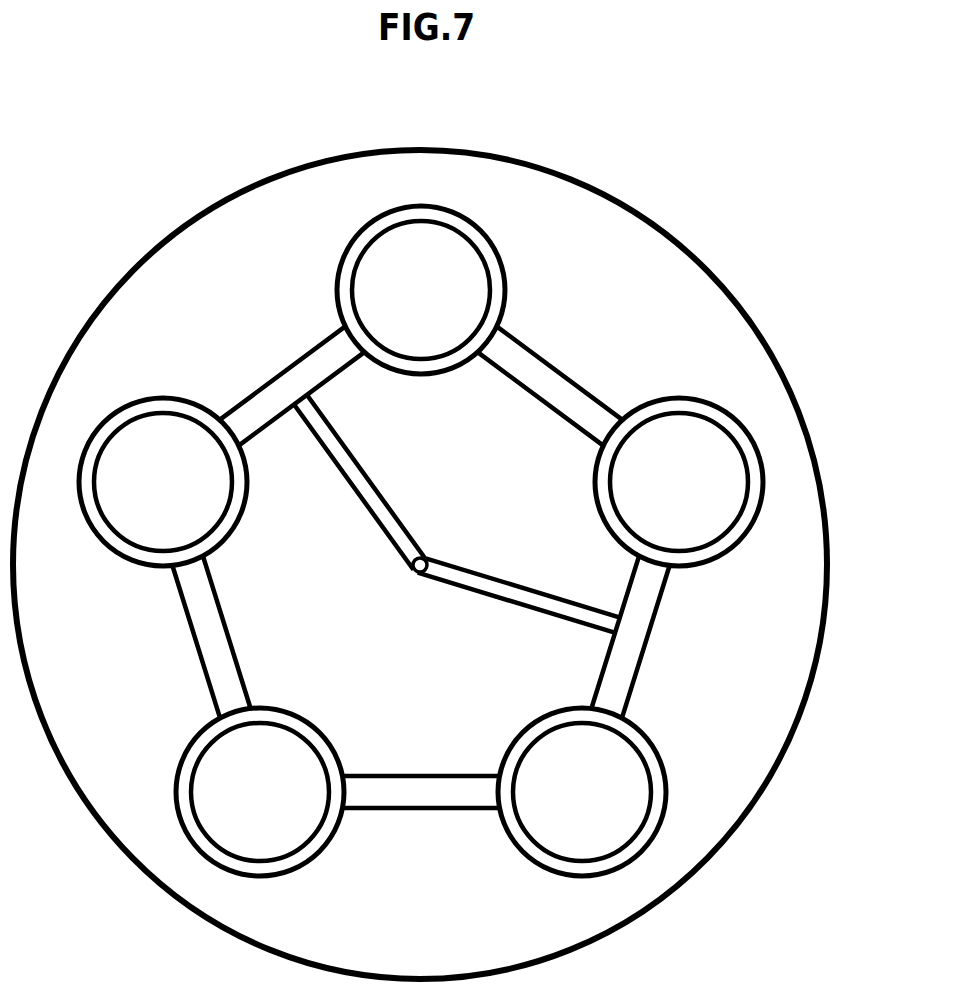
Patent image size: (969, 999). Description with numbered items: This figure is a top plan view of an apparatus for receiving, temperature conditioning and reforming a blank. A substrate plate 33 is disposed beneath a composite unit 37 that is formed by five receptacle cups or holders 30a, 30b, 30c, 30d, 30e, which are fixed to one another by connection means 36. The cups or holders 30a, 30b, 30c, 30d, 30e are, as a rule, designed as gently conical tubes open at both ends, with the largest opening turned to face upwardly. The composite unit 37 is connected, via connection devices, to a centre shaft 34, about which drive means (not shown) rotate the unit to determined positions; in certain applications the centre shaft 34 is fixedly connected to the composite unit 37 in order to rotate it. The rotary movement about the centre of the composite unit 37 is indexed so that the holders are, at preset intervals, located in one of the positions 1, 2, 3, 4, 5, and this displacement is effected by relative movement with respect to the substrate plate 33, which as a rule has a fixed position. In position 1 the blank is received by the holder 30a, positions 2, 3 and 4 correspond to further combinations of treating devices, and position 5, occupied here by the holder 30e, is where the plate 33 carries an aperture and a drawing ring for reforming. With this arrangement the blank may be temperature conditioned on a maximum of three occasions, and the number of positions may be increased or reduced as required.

The position 1 is at (178, 782).
The position 2 is at (100, 536).
The position 3 is at (338, 281).
The position 4 is at (706, 401).
The position 5 is at (526, 859).
The receptacle cup 30a is at (273, 799).
The receptacle cup 30b is at (181, 488).
The receptacle cup 30c is at (431, 290).
The receptacle cup 30d is at (701, 473).
The receptacle cup 30e is at (617, 808).
The substrate plate 33 is at (688, 302).
The centre shaft 34 is at (427, 560).
The connection means 36 is at (315, 389).
The composite unit 37 is at (305, 354).